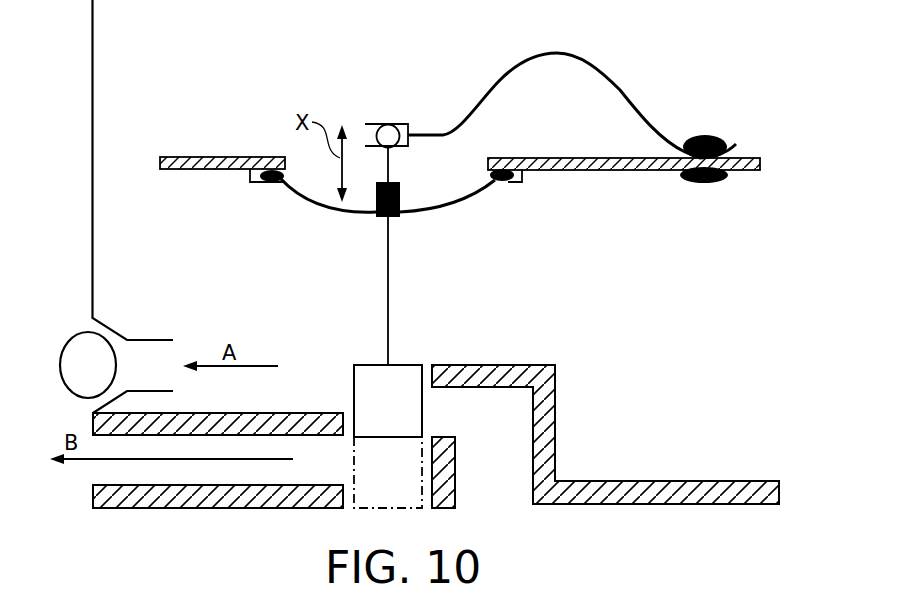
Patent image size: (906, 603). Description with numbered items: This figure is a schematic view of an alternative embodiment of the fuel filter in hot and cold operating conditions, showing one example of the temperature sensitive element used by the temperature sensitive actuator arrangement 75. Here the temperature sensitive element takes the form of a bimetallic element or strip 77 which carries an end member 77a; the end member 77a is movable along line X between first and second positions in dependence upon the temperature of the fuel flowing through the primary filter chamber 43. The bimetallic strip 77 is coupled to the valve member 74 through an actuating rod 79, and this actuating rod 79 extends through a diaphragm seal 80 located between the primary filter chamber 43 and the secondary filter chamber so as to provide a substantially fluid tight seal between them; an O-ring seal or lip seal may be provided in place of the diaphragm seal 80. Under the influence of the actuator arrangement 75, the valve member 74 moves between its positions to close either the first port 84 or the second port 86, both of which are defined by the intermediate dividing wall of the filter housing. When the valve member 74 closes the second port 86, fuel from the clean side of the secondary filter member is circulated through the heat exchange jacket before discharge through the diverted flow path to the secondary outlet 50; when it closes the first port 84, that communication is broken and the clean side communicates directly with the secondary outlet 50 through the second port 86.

The primary filter chamber 43 is at (580, 121).
The secondary outlet 50 is at (92, 475).
The valve member 74 is at (417, 362).
The temperature sensitive actuator arrangement 75 is at (476, 234).
The bimetallic element or strip 77 is at (598, 60).
The end member 77a is at (388, 124).
The actuating rod 79 is at (391, 282).
The diaphragm seal 80 is at (111, 309).
The first port 84 is at (352, 400).
The second port 86 is at (341, 466).